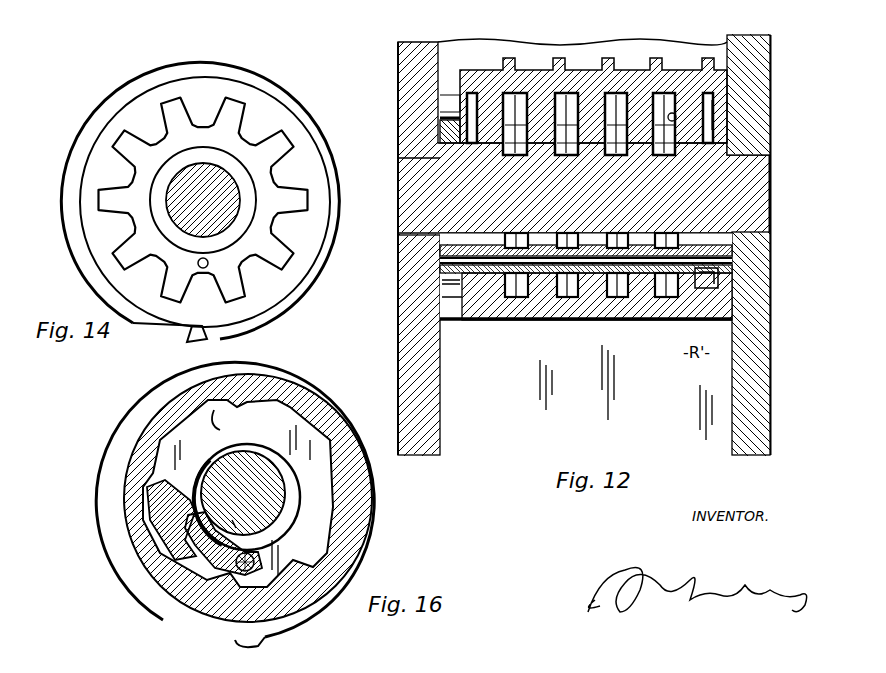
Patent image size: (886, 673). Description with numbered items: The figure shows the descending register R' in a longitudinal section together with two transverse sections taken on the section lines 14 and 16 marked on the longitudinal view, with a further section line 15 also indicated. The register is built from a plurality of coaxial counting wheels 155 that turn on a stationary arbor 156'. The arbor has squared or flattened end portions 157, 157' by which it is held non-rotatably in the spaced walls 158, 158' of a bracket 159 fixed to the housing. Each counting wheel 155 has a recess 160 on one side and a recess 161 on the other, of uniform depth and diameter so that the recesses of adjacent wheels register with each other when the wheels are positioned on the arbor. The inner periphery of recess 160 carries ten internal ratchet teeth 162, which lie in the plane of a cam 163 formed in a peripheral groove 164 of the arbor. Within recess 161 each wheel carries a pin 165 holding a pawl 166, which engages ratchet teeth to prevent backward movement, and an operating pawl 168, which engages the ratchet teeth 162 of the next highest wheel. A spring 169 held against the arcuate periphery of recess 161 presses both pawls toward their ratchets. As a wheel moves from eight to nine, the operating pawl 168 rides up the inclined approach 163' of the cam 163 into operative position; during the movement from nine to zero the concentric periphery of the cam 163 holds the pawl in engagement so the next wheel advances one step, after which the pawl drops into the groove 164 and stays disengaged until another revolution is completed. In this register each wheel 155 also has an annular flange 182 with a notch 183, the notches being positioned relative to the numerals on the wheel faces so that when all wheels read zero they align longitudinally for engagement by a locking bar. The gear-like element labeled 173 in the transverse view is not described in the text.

In FIG. 12, the section line 14 is at (418, 57).
In FIG. 12, the section line 15 is at (566, 30).
In FIG. 12, the section line 16 is at (576, 44).
In FIG. 14, the counting wheel 155 is at (265, 121).
In FIG. 16, the counting wheel 155 is at (304, 406).
In FIG. 12, the counting wheel 155 is at (683, 82).
In FIG. 14, the stationary arbor 156' is at (203, 146).
In FIG. 12, the stationary arbor 156' is at (772, 97).
In FIG. 12, the squared end portion 157 is at (562, 138).
In FIG. 12, the squared end portion 157' is at (790, 245).
In FIG. 12, the bracket wall 158 is at (396, 345).
In FIG. 12, the bracket wall 158' is at (775, 344).
In FIG. 12, the bracket 159 is at (586, 327).
In FIG. 16, the recess 160 is at (310, 497).
In FIG. 12, the recess 160 is at (673, 115).
In FIG. 12, the recess 161 is at (712, 100).
In FIG. 16, the internal ratchet teeth 162 is at (310, 435).
In FIG. 12, the internal ratchet teeth 162 is at (513, 103).
In FIG. 16, the cam 163 is at (200, 444).
In FIG. 16, the inclined approach 163' is at (184, 569).
In FIG. 16, the peripheral groove 164 is at (286, 470).
In FIG. 12, the peripheral groove 164 is at (520, 258).
In FIG. 12, the pin 165 is at (706, 279).
In FIG. 12, the pawl 166 is at (512, 298).
In FIG. 16, the operating pawl 168 is at (160, 505).
In FIG. 12, the operating pawl 168 is at (535, 282).
In FIG. 12, the spring 169 is at (617, 7).
In FIG. 14, the gear 173 is at (226, 118).
In FIG. 12, the gear 173 is at (447, 108).
In FIG. 14, the annular flange 182 is at (262, 84).
In FIG. 16, the annular flange 182 is at (141, 405).
In FIG. 14, the notch 183 is at (191, 330).
In FIG. 16, the notch 183 is at (265, 640).